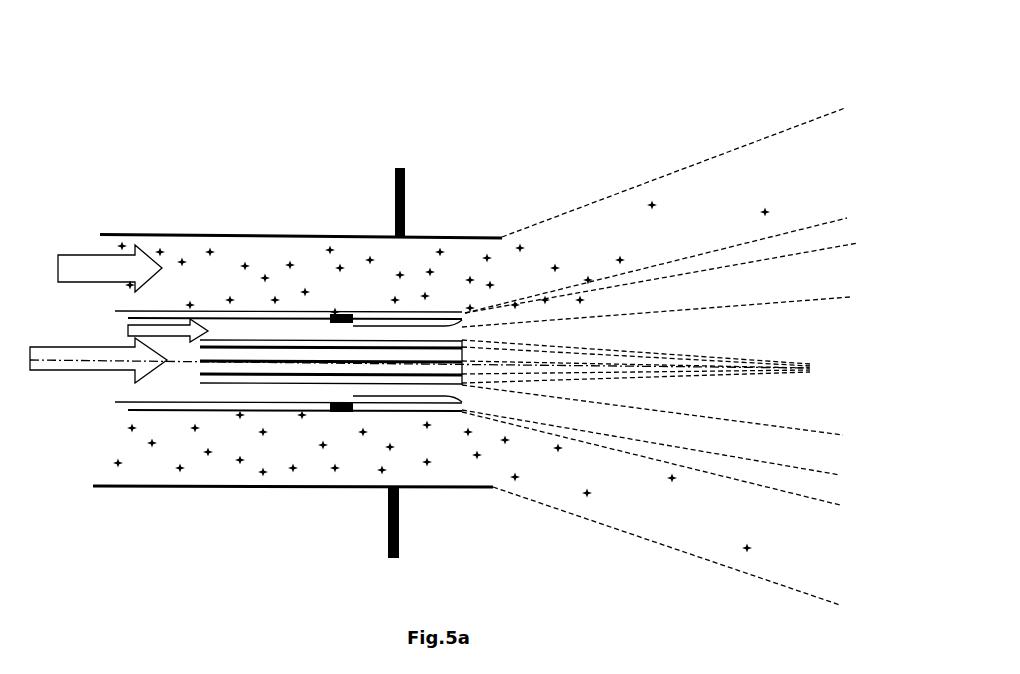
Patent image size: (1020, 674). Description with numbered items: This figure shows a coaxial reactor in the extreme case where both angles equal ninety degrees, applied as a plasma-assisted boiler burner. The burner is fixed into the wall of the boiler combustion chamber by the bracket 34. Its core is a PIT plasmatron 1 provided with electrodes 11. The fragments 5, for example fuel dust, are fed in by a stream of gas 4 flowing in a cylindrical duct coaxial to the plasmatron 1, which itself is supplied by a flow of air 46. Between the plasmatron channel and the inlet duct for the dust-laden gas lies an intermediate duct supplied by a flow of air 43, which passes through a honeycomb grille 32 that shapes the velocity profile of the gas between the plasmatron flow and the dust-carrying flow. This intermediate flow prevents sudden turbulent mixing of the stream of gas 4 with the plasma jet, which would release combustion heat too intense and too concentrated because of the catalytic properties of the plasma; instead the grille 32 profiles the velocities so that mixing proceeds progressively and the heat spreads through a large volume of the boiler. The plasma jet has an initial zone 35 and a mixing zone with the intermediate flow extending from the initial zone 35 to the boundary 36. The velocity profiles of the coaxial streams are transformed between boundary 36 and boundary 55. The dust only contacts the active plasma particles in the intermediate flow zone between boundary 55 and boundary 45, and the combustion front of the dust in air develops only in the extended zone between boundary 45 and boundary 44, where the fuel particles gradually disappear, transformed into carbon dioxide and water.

The PIT plasmatron 1 is at (223, 336).
The stream of gas 4 is at (90, 264).
The fragments 5 is at (243, 246).
The electrodes 11 is at (310, 343).
The honeycomb grille 32 is at (343, 310).
The bracket 34 is at (400, 167).
The initial zone 35 is at (512, 346).
The mixing zone boundary 36 is at (593, 321).
The flow of air 43 is at (123, 331).
The combustion front zone boundary 44 is at (682, 165).
The plasma contact zone boundary 45 is at (632, 267).
The flow of air 46 is at (84, 361).
The velocity transformation zone boundary 55 is at (812, 250).